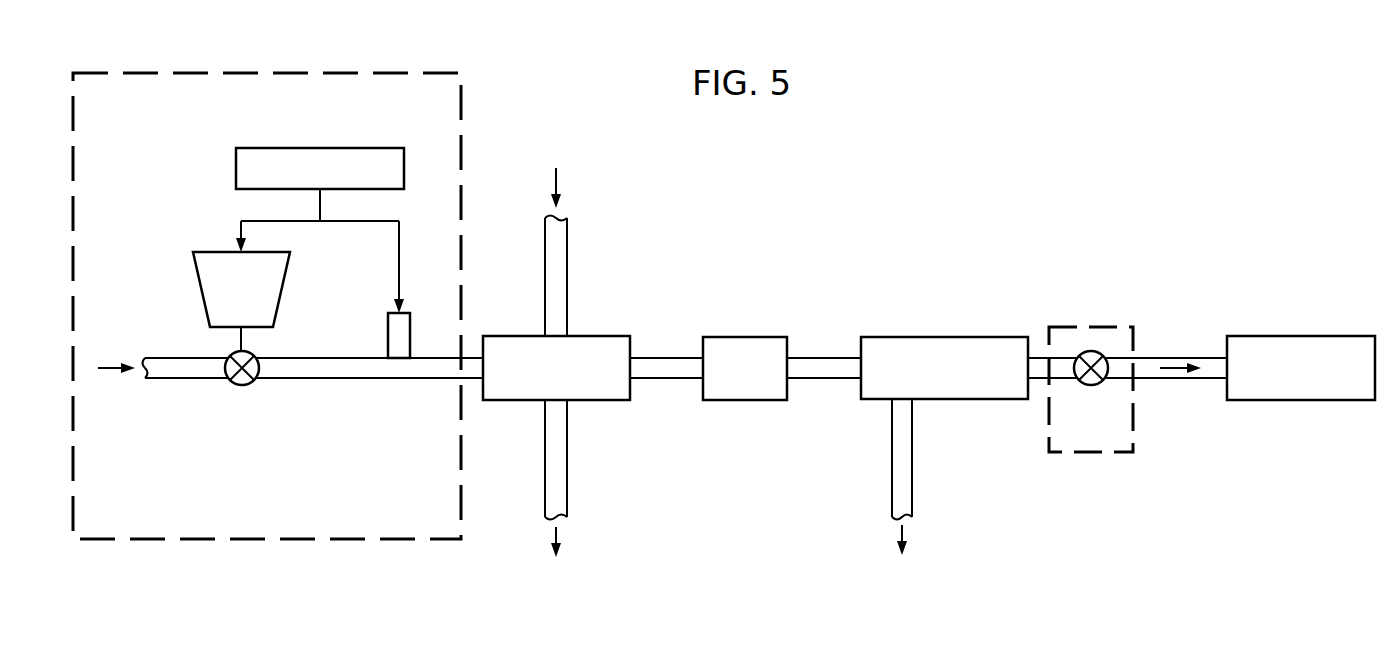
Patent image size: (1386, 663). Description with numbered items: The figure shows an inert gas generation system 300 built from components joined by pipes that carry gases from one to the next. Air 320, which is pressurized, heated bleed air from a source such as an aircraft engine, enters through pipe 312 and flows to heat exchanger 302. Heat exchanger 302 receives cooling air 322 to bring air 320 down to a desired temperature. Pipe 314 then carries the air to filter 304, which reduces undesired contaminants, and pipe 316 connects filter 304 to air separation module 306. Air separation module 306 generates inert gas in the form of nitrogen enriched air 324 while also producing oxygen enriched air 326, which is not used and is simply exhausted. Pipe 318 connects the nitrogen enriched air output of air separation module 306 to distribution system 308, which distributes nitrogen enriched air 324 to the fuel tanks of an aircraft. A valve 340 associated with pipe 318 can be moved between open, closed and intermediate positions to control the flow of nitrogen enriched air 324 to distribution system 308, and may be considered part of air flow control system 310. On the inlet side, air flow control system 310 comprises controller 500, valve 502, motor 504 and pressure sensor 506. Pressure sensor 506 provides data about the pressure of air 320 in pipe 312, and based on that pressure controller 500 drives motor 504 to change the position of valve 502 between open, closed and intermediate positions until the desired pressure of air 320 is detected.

The inert gas generation system 300 is at (1134, 108).
The air flow control system 310 is at (191, 62).
The controller 500 is at (290, 147).
The motor 504 is at (198, 290).
The pressure sensor 506 is at (388, 335).
The valve 502 is at (242, 387).
The pipe 312 is at (360, 380).
The air 320 is at (116, 370).
The heat exchanger 302 is at (525, 402).
The cooling air 322 is at (556, 180).
The pipe 314 is at (672, 380).
The filter 304 is at (745, 401).
The pipe 316 is at (822, 380).
The air separation module 306 is at (943, 401).
The oxygen enriched air 326 is at (906, 540).
The pipe 318 is at (1188, 380).
The valve 340 is at (1092, 387).
The nitrogen enriched air 324 is at (1177, 364).
The distribution system 308 is at (1300, 401).